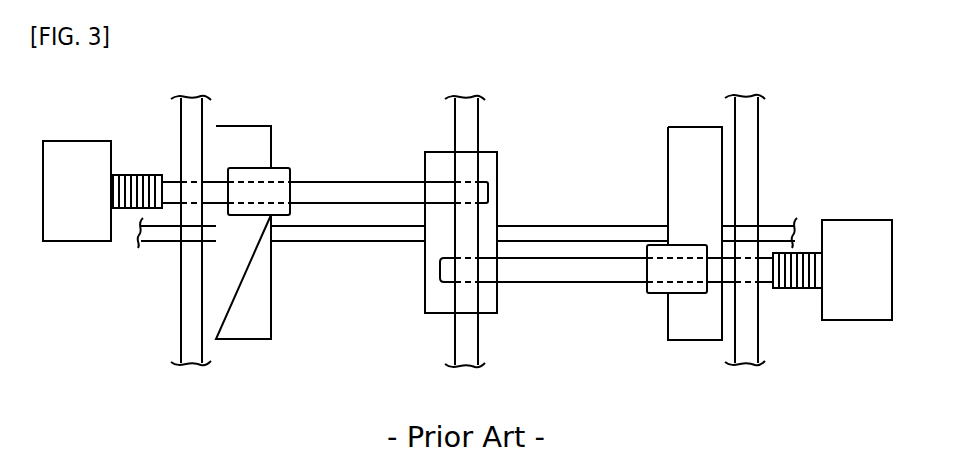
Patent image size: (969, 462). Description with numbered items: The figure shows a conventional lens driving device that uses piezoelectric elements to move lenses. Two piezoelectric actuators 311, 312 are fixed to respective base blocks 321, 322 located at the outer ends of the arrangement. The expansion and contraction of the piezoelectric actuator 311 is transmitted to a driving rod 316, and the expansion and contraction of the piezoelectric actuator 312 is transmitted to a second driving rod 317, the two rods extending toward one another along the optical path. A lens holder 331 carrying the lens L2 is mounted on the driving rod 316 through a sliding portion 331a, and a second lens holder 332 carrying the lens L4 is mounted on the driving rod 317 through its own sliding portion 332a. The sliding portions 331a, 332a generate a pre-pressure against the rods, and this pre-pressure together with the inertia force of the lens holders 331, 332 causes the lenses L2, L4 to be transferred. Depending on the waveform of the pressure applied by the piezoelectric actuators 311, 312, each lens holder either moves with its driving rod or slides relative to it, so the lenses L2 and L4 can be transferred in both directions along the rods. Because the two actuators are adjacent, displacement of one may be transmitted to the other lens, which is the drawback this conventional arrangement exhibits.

The piezoelectric actuator 311 is at (133, 174).
The piezoelectric actuator 312 is at (805, 252).
The driving rod 316 is at (347, 184).
The driving rod 317 is at (556, 285).
The base block 321 is at (77, 243).
The base block 322 is at (850, 322).
The lens holder 331 is at (245, 341).
The sliding portion 331a is at (278, 168).
The lens holder 332 is at (688, 127).
The sliding portion 332a is at (657, 296).
The lens L2 is at (277, 270).
The lens L4 is at (664, 163).